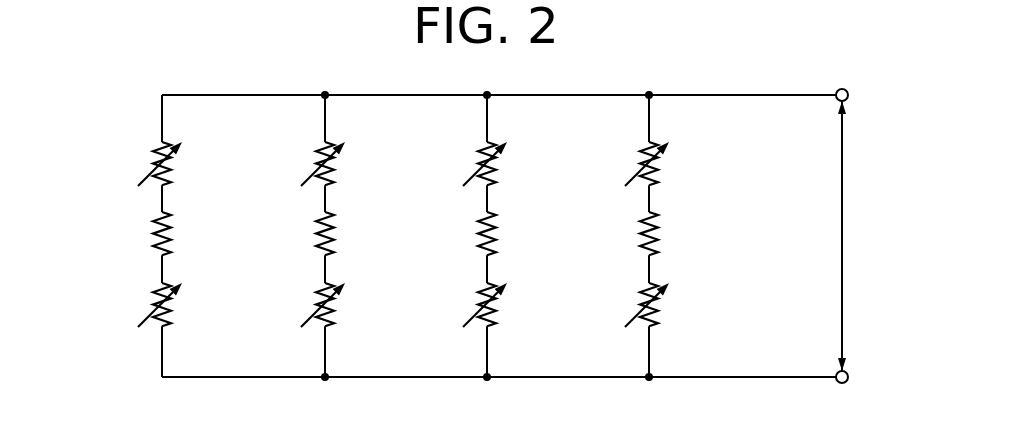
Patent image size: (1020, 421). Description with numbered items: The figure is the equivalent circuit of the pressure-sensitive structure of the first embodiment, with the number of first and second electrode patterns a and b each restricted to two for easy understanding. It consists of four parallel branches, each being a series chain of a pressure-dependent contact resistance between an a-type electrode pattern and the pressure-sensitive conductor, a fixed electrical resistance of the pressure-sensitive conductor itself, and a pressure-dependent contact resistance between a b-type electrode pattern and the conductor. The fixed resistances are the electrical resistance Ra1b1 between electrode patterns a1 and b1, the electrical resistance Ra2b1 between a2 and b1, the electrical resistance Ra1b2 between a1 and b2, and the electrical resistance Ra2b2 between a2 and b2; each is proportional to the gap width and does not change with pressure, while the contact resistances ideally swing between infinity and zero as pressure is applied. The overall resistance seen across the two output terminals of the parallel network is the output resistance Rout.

The electrical resistance Ra1b1 is at (155, 218).
The electrical resistance Ra2b1 is at (318, 218).
The electrical resistance Ra1b2 is at (480, 218).
The electrical resistance Ra2b2 is at (642, 218).
The output resistance Rout is at (876, 236).